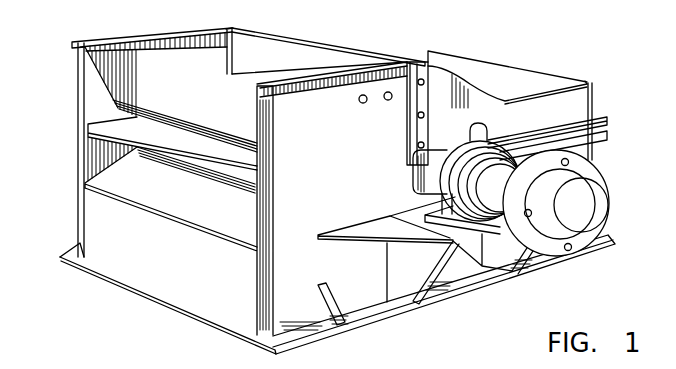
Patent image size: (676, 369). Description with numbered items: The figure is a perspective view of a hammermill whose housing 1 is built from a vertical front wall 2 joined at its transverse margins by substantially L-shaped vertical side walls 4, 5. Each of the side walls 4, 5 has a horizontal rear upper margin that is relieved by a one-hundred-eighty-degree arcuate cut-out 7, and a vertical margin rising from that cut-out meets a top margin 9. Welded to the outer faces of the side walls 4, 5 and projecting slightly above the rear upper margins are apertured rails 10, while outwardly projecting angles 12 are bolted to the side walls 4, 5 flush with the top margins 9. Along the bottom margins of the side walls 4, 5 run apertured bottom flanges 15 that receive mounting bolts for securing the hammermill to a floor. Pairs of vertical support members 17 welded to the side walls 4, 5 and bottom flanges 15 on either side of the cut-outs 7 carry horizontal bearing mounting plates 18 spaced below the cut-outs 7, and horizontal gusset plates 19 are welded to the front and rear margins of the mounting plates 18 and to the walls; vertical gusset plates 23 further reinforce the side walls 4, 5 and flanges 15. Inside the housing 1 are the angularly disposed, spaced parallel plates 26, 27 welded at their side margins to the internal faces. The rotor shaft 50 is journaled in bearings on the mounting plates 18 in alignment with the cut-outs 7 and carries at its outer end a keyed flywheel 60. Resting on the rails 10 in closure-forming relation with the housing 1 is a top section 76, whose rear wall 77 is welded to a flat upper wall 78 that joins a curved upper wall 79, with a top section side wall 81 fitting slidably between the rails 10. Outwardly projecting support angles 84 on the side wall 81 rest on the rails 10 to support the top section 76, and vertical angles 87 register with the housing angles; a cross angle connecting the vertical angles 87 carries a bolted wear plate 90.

The housing 1 is at (180, 26).
The vertical front wall 2 is at (90, 213).
The side wall 4 is at (78, 140).
The side wall 5 is at (368, 295).
The arcuate cut-out 7 is at (416, 183).
The top margin 9 is at (135, 37).
The rail 10 is at (607, 143).
The outwardly projecting angle 12 is at (78, 52).
The bottom flange 15 is at (67, 255).
The vertical support member 17 is at (450, 300).
The bearing mounting plate 18 is at (432, 205).
The horizontal gusset plate 19 is at (368, 238).
The vertical gusset plate 23 is at (318, 288).
The angularly disposed plate 26 is at (100, 127).
The angularly disposed plate 27 is at (83, 178).
The rotor shaft 50 is at (607, 195).
The flywheel 60 is at (610, 223).
The top section 76 is at (548, 64).
The rear wall 77 is at (595, 107).
The flat upper wall 78 is at (487, 67).
The curved upper wall 79 is at (445, 58).
The top section side wall 81 is at (589, 85).
The support angle 84 is at (607, 125).
The vertical angle 87 is at (322, 40).
The wear plate 90 is at (267, 45).